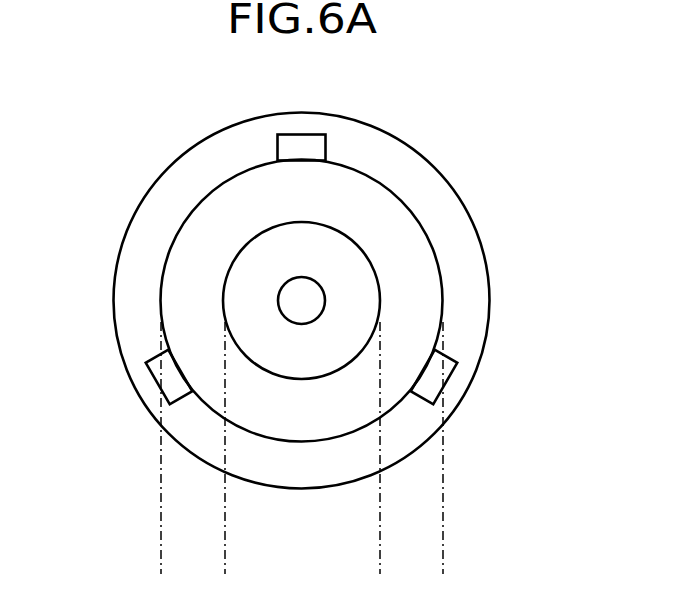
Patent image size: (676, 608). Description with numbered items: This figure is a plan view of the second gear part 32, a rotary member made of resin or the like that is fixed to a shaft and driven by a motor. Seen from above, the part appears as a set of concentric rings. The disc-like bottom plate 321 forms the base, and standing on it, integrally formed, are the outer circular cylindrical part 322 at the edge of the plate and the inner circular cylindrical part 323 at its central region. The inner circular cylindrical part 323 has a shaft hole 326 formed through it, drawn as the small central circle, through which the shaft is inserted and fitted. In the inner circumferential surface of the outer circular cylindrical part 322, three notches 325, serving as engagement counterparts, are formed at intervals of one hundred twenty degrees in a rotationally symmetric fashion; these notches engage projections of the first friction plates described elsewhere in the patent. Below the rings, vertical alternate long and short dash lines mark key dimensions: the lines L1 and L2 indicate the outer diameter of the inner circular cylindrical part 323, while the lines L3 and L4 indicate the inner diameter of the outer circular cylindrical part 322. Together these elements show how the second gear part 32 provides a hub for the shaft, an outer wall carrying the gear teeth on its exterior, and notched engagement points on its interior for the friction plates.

The second gear part 32 is at (457, 143).
The bottom plate 321 is at (418, 293).
The outer circular cylindrical part 322 is at (131, 300).
The inner circular cylindrical part 323 is at (355, 286).
The notches 325 is at (302, 150).
The shaft hole 326 is at (322, 283).
The alternate long and short dash line L1 is at (226, 547).
The alternate long and short dash line L2 is at (379, 547).
The alternate long and short dash line L3 is at (160, 547).
The alternate long and short dash line L4 is at (444, 547).